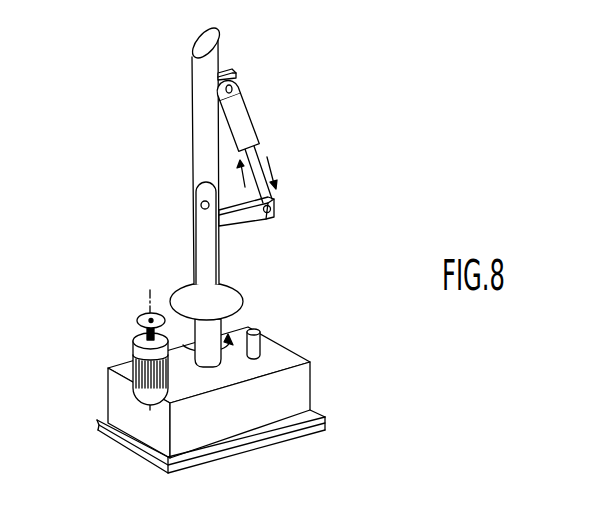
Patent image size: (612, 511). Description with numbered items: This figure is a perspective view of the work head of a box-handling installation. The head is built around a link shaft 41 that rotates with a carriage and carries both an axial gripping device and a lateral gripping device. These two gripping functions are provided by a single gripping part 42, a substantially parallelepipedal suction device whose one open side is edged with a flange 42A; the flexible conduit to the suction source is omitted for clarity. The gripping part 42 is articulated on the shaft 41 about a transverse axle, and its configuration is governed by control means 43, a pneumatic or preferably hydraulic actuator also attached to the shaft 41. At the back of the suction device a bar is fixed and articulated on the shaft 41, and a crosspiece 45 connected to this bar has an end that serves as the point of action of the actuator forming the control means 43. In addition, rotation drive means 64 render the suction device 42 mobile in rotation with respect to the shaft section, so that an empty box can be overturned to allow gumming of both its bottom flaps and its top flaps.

The link shaft 41 is at (192, 132).
The gripping part 42 is at (310, 381).
The flange 42A is at (325, 418).
The control means 43 is at (251, 121).
The crosspiece 45 is at (262, 220).
The rotation drive means 64 is at (133, 358).